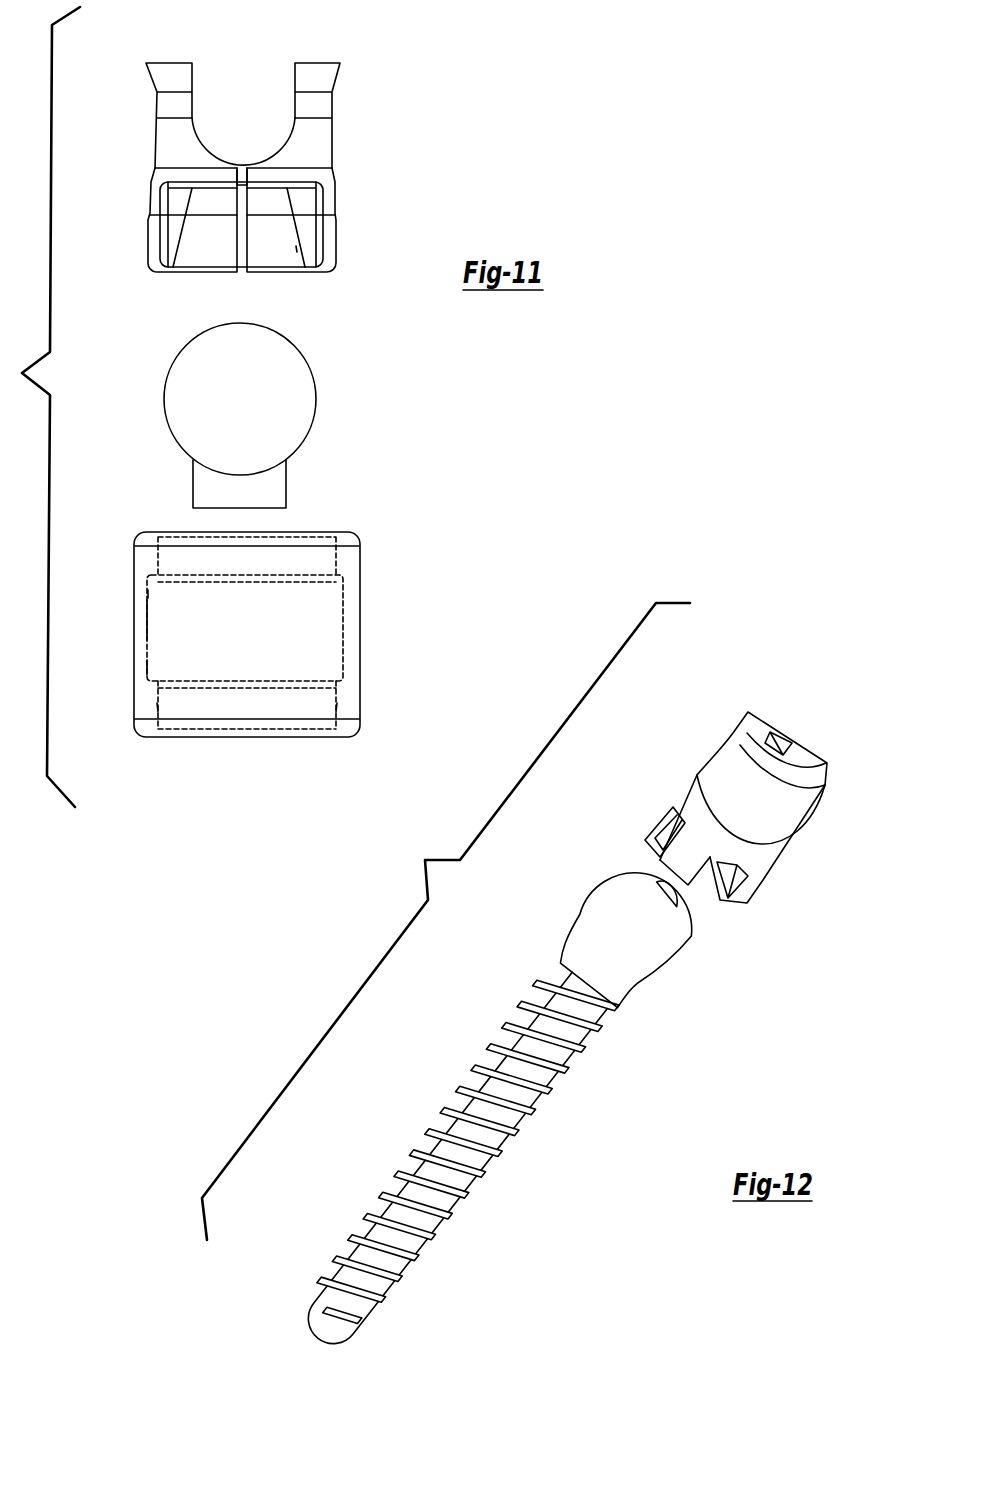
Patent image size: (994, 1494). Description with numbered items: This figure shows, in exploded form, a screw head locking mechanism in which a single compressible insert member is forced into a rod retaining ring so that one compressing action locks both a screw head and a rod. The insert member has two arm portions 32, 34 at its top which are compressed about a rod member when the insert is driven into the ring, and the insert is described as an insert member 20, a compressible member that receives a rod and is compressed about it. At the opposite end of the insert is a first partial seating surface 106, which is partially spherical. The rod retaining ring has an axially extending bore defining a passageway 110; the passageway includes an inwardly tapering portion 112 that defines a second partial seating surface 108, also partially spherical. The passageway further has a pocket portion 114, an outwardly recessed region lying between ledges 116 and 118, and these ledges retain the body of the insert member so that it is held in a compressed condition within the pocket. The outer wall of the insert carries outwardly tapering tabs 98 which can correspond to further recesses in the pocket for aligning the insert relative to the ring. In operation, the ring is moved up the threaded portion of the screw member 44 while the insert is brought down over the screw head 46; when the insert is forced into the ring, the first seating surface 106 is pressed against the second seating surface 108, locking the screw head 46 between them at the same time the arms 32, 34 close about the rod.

In FIG. 11, the arm portion 32 is at (177, 78).
In FIG. 11, the arm portion 34 is at (320, 82).
In FIG. 11, the insert member 20 is at (332, 230).
In FIG. 11, the first partial seating surface 106 is at (296, 246).
In FIG. 11, the screw head 46 is at (278, 385).
In FIG. 12, the screw head 46 is at (655, 938).
In FIG. 11, the screw member 44 is at (290, 488).
In FIG. 12, the screw member 44 is at (519, 1145).
In FIG. 11, the pocket portion 114 is at (150, 608).
In FIG. 11, the ledge 116 is at (149, 590).
In FIG. 11, the ledge 118 is at (150, 675).
In FIG. 11, the passageway 110 is at (312, 622).
In FIG. 11, the inwardly tapering portion 112 is at (157, 703).
In FIG. 11, the second partial seating surface 108 is at (337, 703).
In FIG. 12, the outwardly tapering tab 98 is at (688, 877).